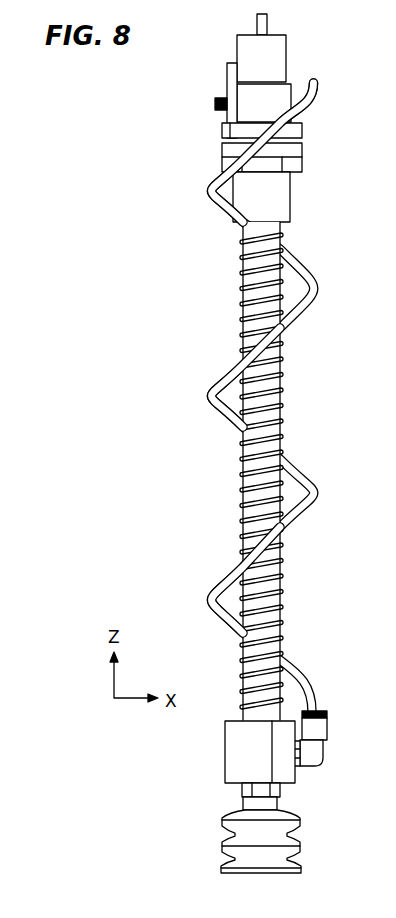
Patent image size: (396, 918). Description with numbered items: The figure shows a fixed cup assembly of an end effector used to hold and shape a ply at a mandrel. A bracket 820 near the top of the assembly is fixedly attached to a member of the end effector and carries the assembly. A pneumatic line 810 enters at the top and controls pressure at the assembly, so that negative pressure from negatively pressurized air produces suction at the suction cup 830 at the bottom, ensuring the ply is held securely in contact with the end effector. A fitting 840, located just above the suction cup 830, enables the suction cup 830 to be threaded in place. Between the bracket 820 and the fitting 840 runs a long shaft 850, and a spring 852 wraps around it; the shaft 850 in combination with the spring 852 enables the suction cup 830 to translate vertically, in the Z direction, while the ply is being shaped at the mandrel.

The pneumatic line 810 is at (270, 22).
The bracket 820 is at (227, 79).
The suction cup 830 is at (298, 816).
The fitting 840 is at (242, 789).
The shaft 850 is at (270, 568).
The spring 852 is at (282, 373).